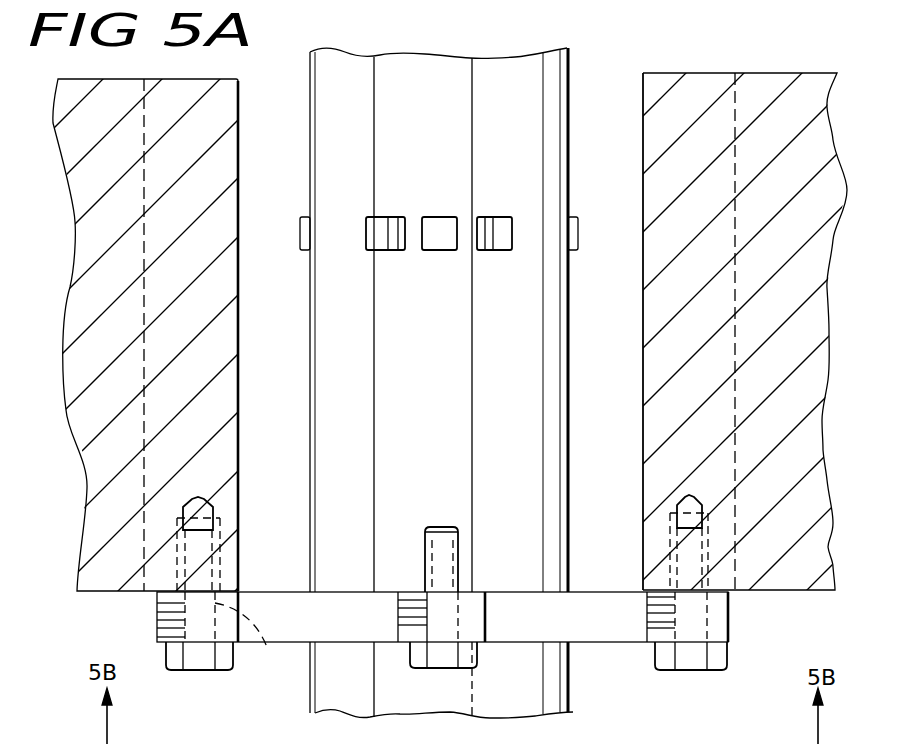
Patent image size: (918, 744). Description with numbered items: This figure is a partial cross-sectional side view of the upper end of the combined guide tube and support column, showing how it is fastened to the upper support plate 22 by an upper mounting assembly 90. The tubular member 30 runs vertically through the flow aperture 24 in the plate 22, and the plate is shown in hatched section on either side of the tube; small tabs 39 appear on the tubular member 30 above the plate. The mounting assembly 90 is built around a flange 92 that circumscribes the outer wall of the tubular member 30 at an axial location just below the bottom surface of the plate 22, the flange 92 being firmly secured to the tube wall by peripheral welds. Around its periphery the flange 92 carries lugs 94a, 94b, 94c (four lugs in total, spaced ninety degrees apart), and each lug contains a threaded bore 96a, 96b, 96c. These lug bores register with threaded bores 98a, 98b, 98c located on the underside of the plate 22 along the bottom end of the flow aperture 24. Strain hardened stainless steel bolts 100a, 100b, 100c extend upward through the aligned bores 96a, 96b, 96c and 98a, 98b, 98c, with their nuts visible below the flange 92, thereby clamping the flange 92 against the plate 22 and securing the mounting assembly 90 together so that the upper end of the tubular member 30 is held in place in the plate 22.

The upper support plate 22 is at (813, 343).
The flow aperture 24 is at (643, 390).
The tubular member 30 is at (548, 353).
The tabs 39 is at (445, 252).
The upper mounting assembly 90 is at (442, 575).
The flange 92 is at (523, 595).
The lug 94a is at (165, 617).
The lug 94b is at (477, 615).
The lug 94c is at (728, 612).
The threaded bore 96a is at (267, 648).
The threaded bore 96b is at (427, 623).
The threaded bore 96c is at (707, 627).
The threaded bore 98a is at (183, 565).
The threaded bore 98b is at (441, 559).
The threaded bore 98c is at (705, 570).
The bolt 100a is at (197, 657).
The bolt 100b is at (447, 657).
The bolt 100c is at (685, 657).